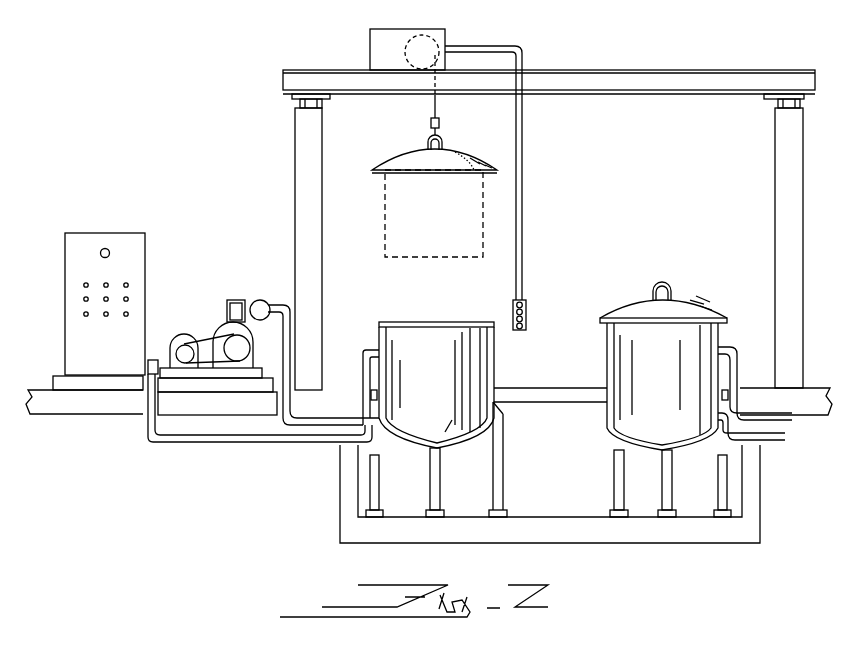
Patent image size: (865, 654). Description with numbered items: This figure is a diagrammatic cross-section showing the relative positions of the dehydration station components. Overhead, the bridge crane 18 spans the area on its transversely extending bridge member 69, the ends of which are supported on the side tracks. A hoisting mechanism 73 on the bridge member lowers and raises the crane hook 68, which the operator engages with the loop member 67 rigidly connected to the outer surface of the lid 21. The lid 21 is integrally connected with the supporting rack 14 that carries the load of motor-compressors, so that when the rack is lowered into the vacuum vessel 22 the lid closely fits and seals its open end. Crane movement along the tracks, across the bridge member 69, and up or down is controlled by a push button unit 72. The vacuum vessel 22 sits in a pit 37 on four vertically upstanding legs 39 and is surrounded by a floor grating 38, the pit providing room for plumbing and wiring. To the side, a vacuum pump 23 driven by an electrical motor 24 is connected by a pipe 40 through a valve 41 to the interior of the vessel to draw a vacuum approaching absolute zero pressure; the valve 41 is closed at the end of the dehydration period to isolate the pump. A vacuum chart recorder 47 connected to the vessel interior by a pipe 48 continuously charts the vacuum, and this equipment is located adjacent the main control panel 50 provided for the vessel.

The bridge crane 18 is at (556, 50).
The bridge member 69 is at (622, 71).
The hoisting mechanism 73 is at (413, 29).
The crane hook 68 is at (440, 126).
The loop member 67 is at (446, 141).
The lid 21 is at (470, 160).
The supporting rack 14 is at (385, 226).
The main control panel 50 is at (145, 260).
The vacuum pump 23 is at (222, 332).
The electrical motor 24 is at (186, 345).
The valve 41 is at (262, 300).
The vacuum chart recorder 47 is at (153, 360).
The pipe 48 is at (215, 442).
The pipe 40 is at (363, 375).
The vacuum vessel 22 is at (494, 366).
The floor grating 38 is at (530, 390).
The legs 39 is at (506, 455).
The pit 37 is at (580, 490).
The push button unit 72 is at (527, 315).